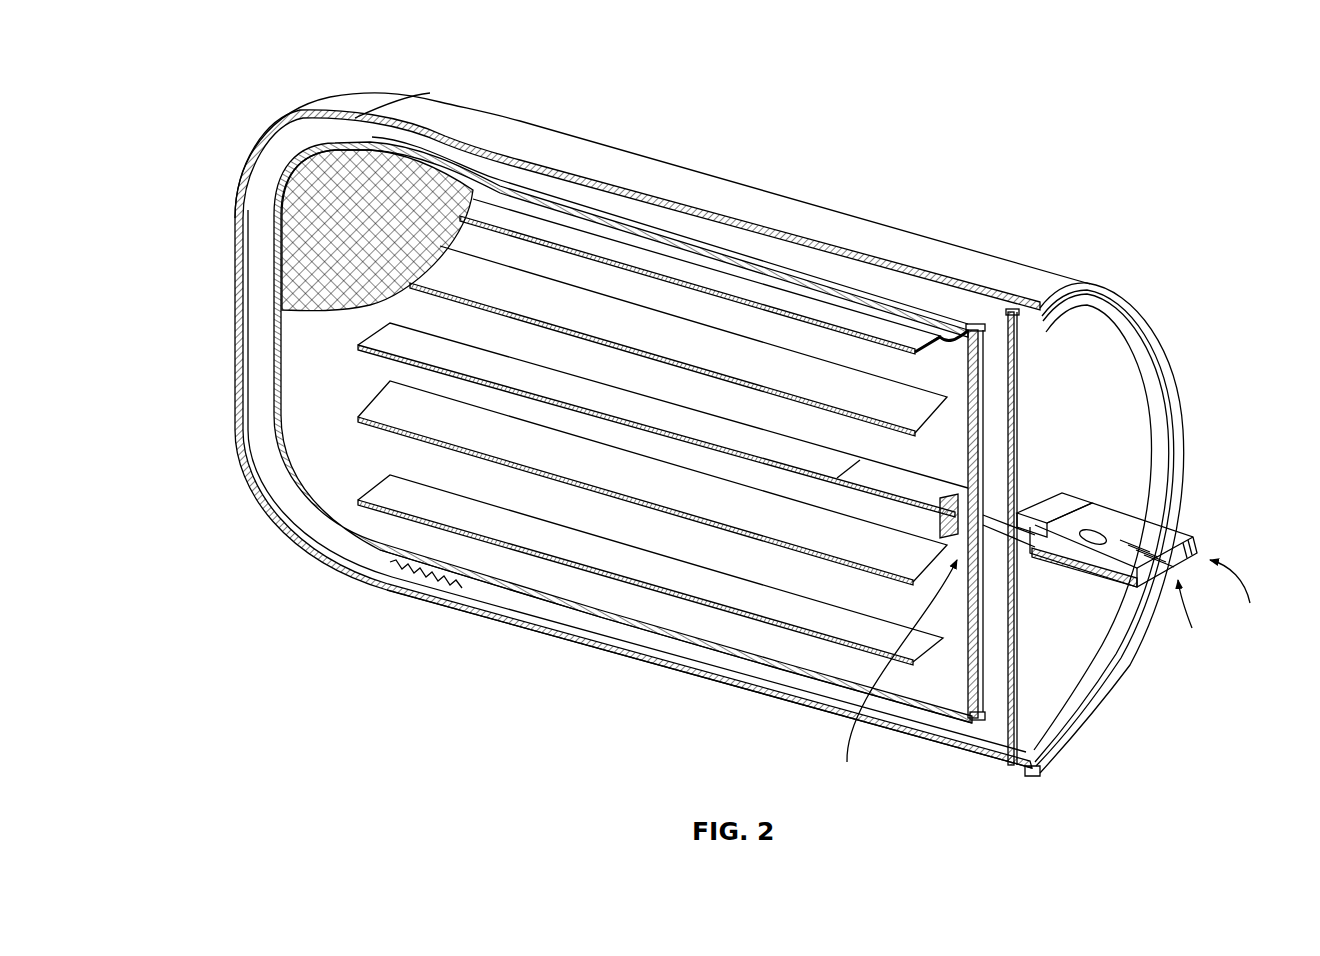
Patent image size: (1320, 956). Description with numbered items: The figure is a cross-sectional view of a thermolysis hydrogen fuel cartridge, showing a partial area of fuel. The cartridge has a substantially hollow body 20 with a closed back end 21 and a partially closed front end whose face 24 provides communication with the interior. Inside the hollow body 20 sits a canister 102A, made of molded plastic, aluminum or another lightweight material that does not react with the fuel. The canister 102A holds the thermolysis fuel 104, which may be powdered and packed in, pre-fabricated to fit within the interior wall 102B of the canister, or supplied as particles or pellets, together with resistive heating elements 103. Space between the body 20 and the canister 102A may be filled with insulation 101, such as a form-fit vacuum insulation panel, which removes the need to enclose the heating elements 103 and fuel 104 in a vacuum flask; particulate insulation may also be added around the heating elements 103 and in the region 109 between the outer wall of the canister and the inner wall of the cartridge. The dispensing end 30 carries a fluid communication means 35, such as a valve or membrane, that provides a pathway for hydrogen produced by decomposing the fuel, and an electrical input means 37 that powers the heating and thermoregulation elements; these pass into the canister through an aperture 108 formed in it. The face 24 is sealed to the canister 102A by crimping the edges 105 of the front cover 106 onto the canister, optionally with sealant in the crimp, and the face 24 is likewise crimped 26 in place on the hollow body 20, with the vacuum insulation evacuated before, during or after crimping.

The hollow body 20 is at (570, 150).
The closed back end 21 is at (235, 212).
The face 24 is at (1104, 376).
The crimp 26 is at (1110, 704).
The dispensing end 30 is at (1070, 497).
The fluid communication means 35 is at (1232, 596).
The electrical input means 37 is at (1191, 618).
The insulation 101 is at (288, 153).
The canister 102A is at (270, 321).
The interior wall of the canister 102B is at (282, 410).
The resistive heating elements 103 is at (385, 492).
The thermolysis fuel 104 is at (325, 192).
The edges of the front cover 105 is at (936, 328).
The front cover 106 is at (972, 622).
The aperture 108 is at (892, 676).
The region 109 is at (407, 570).